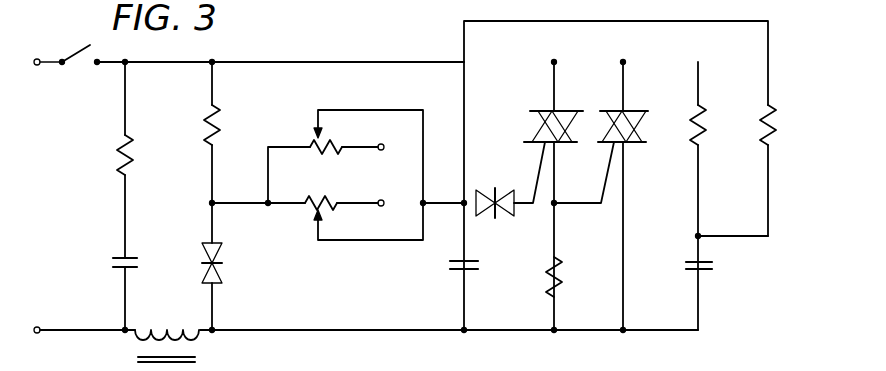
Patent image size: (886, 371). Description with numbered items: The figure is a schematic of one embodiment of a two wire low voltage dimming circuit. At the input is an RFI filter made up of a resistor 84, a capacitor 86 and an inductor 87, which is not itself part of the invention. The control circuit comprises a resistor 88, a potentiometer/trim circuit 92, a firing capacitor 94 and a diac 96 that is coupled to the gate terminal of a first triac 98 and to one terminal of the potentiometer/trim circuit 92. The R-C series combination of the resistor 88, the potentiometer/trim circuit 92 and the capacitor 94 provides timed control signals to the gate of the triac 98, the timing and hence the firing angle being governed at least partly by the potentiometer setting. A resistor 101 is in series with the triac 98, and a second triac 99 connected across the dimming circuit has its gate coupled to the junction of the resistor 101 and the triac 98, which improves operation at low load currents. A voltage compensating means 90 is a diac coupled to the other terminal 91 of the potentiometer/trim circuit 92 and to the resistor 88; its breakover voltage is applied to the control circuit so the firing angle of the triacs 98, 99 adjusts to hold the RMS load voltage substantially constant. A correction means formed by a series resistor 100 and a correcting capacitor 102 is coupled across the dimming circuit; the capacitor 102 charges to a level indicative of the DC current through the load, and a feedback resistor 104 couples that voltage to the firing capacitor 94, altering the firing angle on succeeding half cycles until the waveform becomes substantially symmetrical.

The resistor 84 is at (131, 135).
The capacitor 86 is at (137, 258).
The inductor 87 is at (203, 333).
The resistor 88 is at (218, 107).
The voltage compensating means 90 is at (218, 270).
The other terminal of potentiometer/trim circuit 91 is at (266, 198).
The potentiometer/trim circuit 92 is at (335, 140).
The firing capacitor 94 is at (470, 270).
The diac 96 is at (509, 190).
The first triac 98 is at (532, 124).
The second triac 99 is at (630, 111).
The resistor 100 is at (704, 148).
The resistor 101 is at (560, 268).
The correcting capacitor 102 is at (706, 271).
The feedback resistor 104 is at (756, 112).